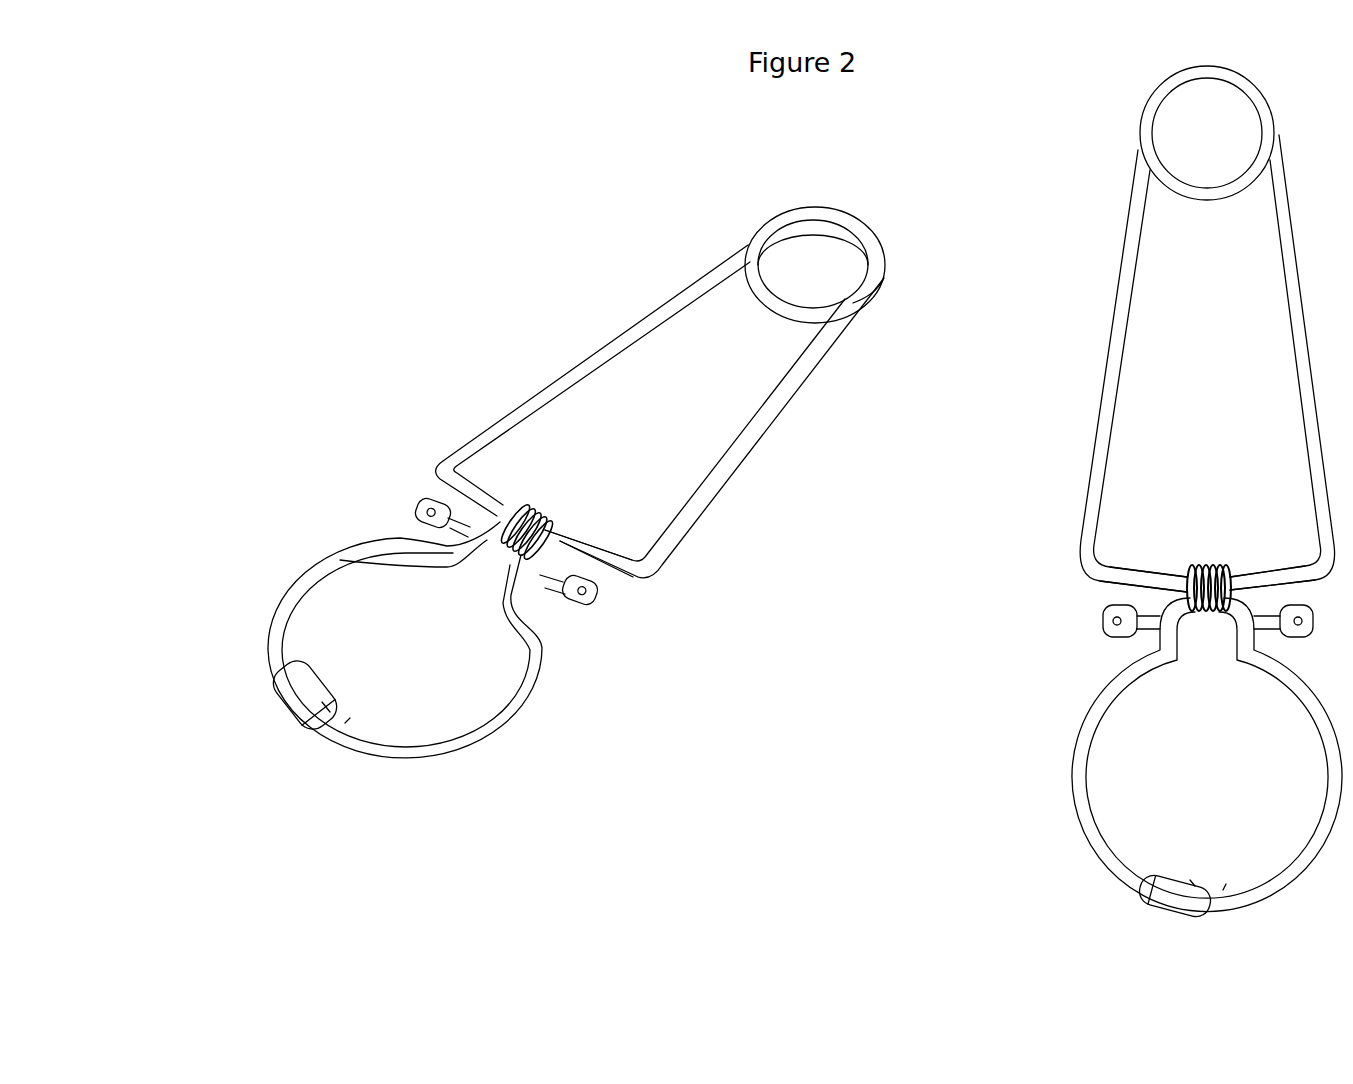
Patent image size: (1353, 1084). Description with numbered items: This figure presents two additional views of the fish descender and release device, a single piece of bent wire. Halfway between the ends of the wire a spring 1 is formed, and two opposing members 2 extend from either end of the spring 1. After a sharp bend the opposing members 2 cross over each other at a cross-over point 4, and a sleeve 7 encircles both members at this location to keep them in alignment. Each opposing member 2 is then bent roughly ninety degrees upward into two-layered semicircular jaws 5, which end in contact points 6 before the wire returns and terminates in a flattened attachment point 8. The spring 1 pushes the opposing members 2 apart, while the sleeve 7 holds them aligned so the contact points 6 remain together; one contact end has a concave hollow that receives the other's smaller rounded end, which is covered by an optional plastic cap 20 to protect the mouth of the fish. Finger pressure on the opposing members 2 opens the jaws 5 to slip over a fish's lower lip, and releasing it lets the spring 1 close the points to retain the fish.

The spring 1 is at (800, 213).
The opposing members 2 is at (778, 423).
The cross-over point 4 is at (615, 548).
The jaws 5 is at (365, 558).
The contact points 6 is at (345, 723).
The sleeve 7 is at (545, 520).
The flattened attachment point 8 is at (570, 605).
The plastic cap 20 is at (300, 702).